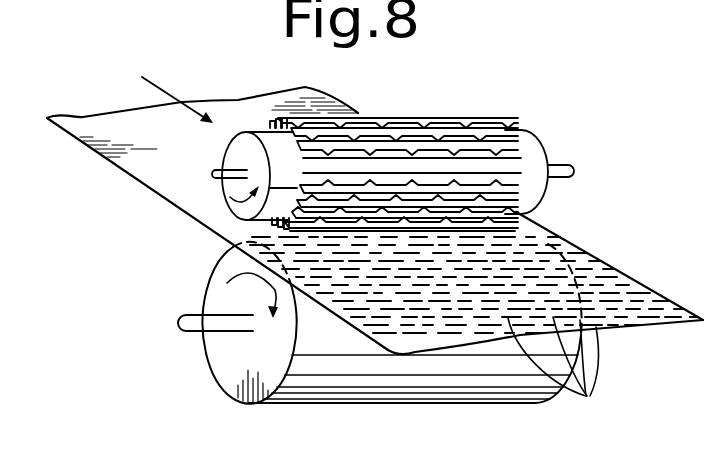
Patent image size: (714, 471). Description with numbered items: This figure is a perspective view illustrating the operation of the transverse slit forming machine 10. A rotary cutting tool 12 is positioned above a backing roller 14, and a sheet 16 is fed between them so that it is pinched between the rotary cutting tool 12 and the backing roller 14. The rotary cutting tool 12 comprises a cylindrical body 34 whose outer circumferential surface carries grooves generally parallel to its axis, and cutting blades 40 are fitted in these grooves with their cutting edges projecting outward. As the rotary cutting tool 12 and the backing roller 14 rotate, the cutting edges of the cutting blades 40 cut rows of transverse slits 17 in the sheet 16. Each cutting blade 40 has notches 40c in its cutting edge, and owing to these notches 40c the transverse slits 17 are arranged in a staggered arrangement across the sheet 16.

The transverse slit forming machine 10 is at (568, 98).
The rotary cutting tool 12 is at (521, 128).
The backing roller 14 is at (205, 290).
The sheet 16 is at (155, 165).
The transverse slits 17 is at (557, 371).
The cylindrical body 34 is at (540, 150).
The cutting blades 40 is at (391, 150).
The notches 40c is at (453, 150).